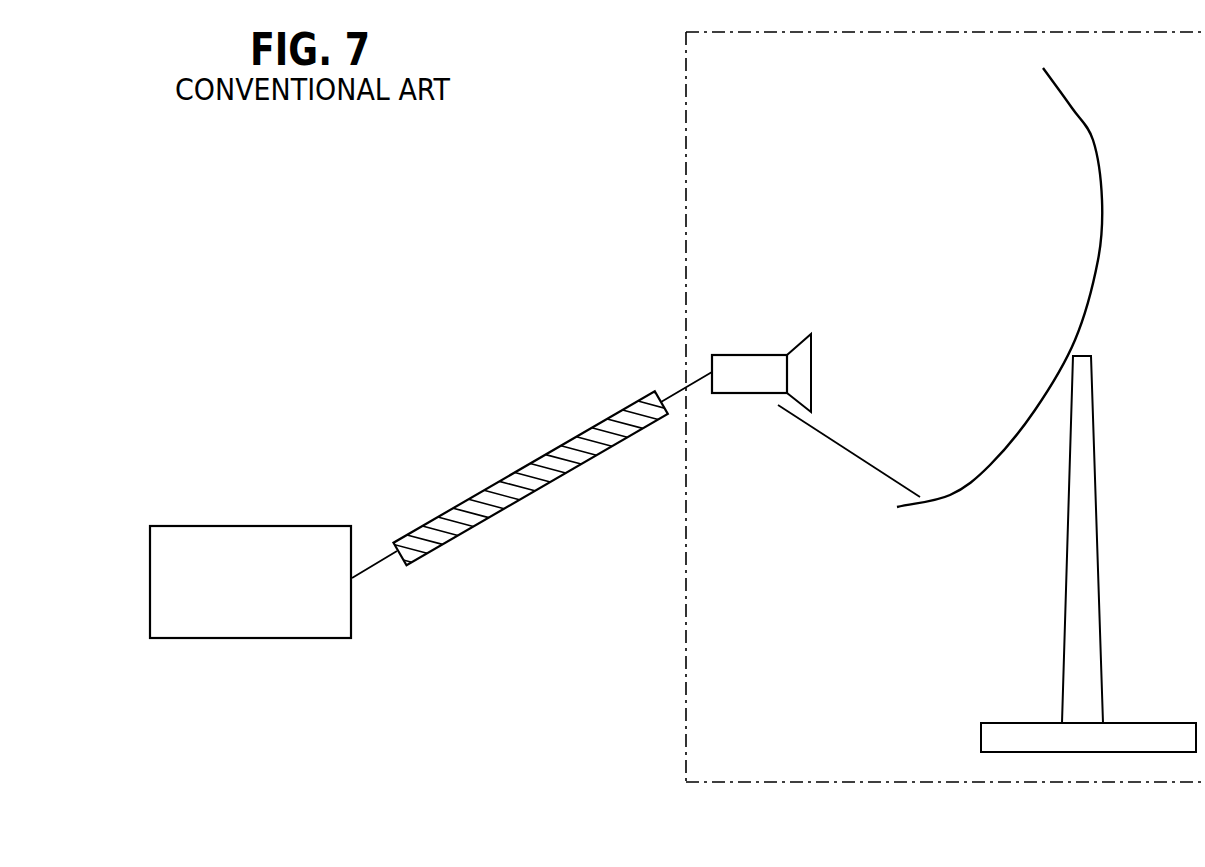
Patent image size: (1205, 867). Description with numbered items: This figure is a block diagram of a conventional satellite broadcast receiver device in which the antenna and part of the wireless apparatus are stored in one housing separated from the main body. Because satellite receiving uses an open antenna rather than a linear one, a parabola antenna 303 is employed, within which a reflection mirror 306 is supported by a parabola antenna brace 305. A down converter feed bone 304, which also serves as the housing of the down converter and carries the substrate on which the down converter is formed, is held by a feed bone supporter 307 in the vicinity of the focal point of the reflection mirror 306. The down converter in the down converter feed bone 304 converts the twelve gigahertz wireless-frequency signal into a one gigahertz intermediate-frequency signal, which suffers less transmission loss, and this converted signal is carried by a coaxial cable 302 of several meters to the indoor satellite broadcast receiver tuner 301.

The indoor satellite broadcast receiver tuner 301 is at (265, 526).
The coaxial cable 302 is at (507, 505).
The parabola antenna 303 is at (1060, 32).
The down converter feed bone 304 is at (757, 355).
The parabola antenna brace 305 is at (1070, 617).
The reflection mirror 306 is at (1097, 145).
The feed bone supporter 307 is at (855, 453).